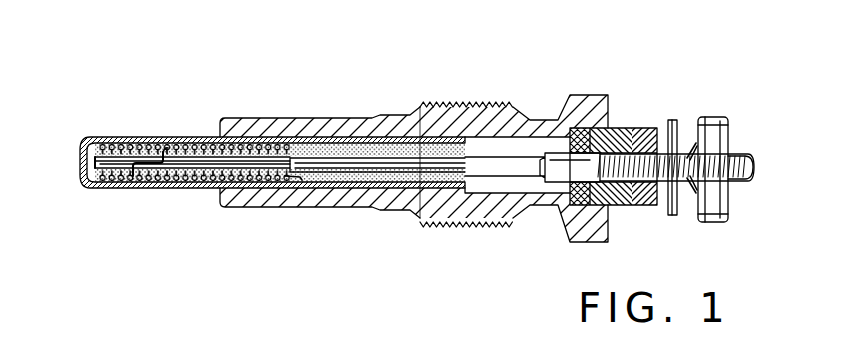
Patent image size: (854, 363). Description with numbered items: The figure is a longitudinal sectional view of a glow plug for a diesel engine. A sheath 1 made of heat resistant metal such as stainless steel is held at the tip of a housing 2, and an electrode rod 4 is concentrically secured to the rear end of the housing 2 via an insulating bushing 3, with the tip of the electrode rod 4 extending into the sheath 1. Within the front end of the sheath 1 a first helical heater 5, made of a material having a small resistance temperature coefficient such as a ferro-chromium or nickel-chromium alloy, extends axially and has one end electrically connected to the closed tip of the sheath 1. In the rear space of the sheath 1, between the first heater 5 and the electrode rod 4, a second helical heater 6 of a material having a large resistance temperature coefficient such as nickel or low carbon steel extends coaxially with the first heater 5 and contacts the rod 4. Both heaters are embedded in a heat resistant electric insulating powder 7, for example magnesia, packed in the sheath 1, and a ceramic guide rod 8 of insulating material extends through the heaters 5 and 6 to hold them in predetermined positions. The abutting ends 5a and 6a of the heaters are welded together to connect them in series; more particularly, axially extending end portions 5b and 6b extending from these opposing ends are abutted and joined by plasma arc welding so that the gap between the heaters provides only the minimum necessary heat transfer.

The sheath 1 is at (267, 130).
The housing 2 is at (463, 105).
The insulating bushing 3 is at (628, 206).
The electrode rod 4 is at (500, 177).
The first helical heater 5 is at (112, 137).
The abutting end of first heater 5a is at (131, 180).
The axially extending end portion of first heater 5b is at (145, 162).
The second helical heater 6 is at (199, 143).
The abutting end of second heater 6a is at (167, 150).
The axially extending end portion of second heater 6b is at (157, 177).
The powder 7 is at (318, 143).
The guide rod 8 is at (197, 172).